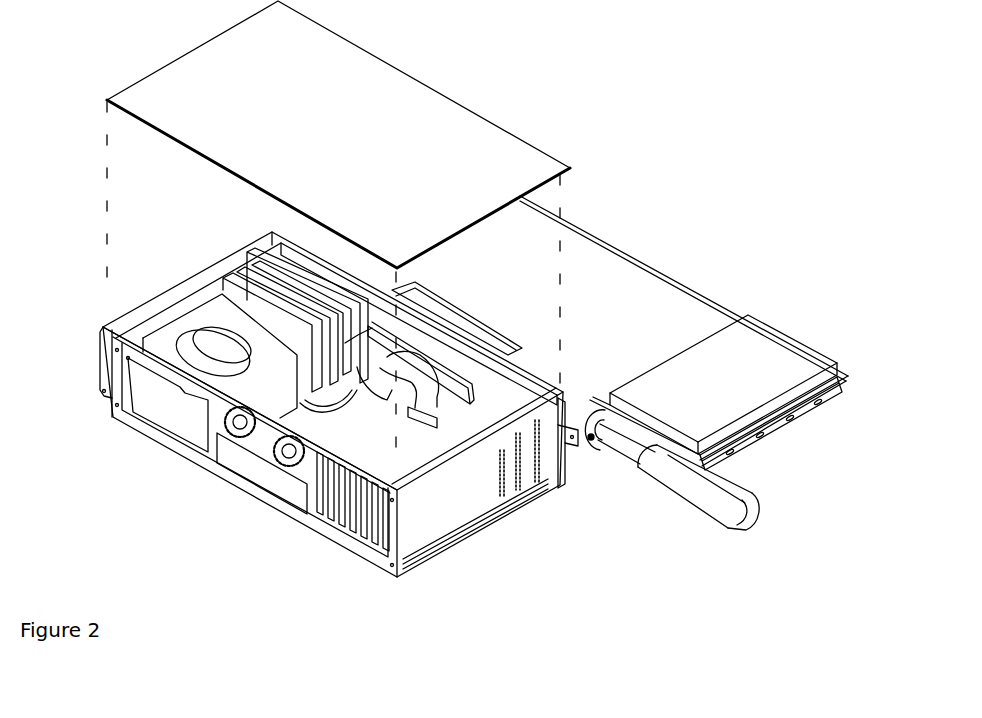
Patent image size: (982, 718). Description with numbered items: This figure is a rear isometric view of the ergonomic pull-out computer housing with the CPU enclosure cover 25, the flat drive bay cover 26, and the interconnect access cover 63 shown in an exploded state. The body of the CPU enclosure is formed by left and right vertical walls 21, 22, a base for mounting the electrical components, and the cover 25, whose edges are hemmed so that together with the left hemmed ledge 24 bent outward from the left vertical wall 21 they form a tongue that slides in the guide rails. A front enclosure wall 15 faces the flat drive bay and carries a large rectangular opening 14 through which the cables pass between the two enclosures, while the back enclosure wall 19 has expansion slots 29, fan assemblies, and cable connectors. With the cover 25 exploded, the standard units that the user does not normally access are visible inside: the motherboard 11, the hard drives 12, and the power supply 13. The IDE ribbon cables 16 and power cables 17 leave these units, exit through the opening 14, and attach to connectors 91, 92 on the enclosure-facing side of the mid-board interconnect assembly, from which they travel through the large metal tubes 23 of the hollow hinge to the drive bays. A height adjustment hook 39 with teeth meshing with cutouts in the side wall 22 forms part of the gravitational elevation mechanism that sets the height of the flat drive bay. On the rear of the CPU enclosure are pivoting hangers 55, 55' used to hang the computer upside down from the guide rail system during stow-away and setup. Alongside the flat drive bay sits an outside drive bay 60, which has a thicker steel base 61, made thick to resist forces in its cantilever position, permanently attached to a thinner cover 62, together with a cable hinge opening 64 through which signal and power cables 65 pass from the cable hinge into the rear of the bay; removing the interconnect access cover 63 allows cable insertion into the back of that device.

The motherboard 11 is at (370, 432).
The hard drives 12 is at (222, 300).
The power supply 13 is at (217, 352).
The opening 14 is at (548, 480).
The front enclosure wall 15 is at (560, 470).
The IDE ribbon cables 16 is at (284, 450).
The power cables 17 is at (232, 420).
The back enclosure wall 19 is at (105, 355).
The left vertical wall 21 is at (450, 497).
The right vertical wall 22 is at (142, 318).
The metal tubes 23 is at (413, 458).
The left hemmed ledge 24 is at (123, 322).
The CPU enclosure cover 25 is at (443, 137).
The flat drive bay cover 26 is at (612, 295).
The expansion slots 29 is at (358, 527).
The height adjustment hook 39 is at (572, 447).
The pivoting hanger 55 is at (417, 554).
The pivoting hanger 55' is at (81, 340).
The outside drive bay 60 is at (724, 447).
The base 61 is at (780, 408).
The cover 62 is at (825, 375).
The interconnect access cover 63 is at (705, 503).
The cable hinge opening 64 is at (587, 448).
The signal and power cables 65 is at (632, 445).
The connector 91 is at (393, 320).
The connector 92 is at (287, 297).